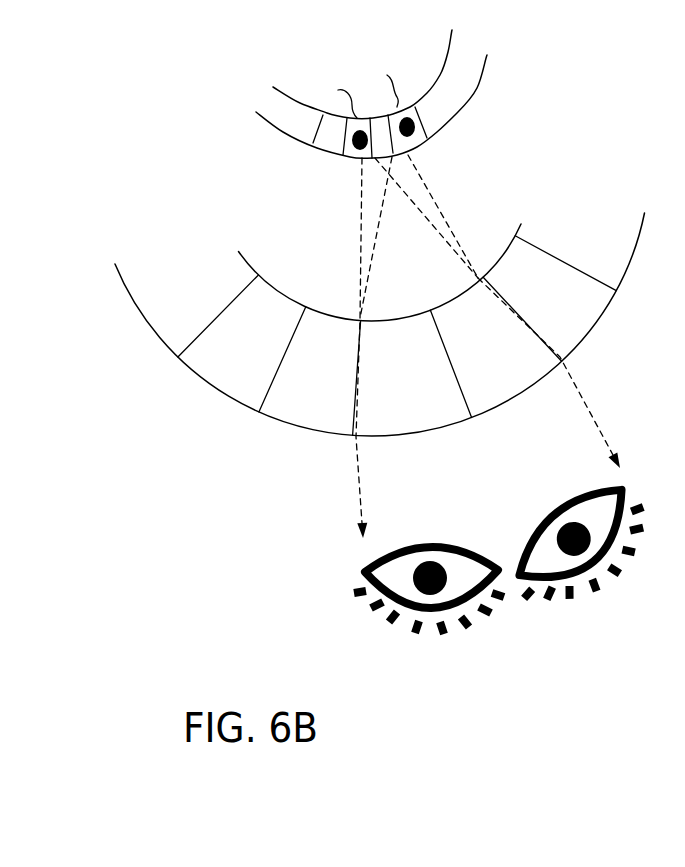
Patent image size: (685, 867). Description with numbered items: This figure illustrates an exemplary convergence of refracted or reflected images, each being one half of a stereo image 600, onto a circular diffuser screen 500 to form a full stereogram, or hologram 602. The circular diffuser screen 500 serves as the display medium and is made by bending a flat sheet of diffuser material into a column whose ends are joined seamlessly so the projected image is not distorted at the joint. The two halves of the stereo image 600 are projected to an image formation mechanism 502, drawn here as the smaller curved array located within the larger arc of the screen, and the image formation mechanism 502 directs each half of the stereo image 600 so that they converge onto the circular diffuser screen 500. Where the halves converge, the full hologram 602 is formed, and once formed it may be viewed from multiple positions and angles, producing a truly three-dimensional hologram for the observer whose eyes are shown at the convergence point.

The circular diffuser screen 500 is at (230, 390).
The image formation mechanism 502 is at (420, 120).
The stereo image 600 is at (362, 205).
The full stereogram (hologram) 602 is at (357, 481).